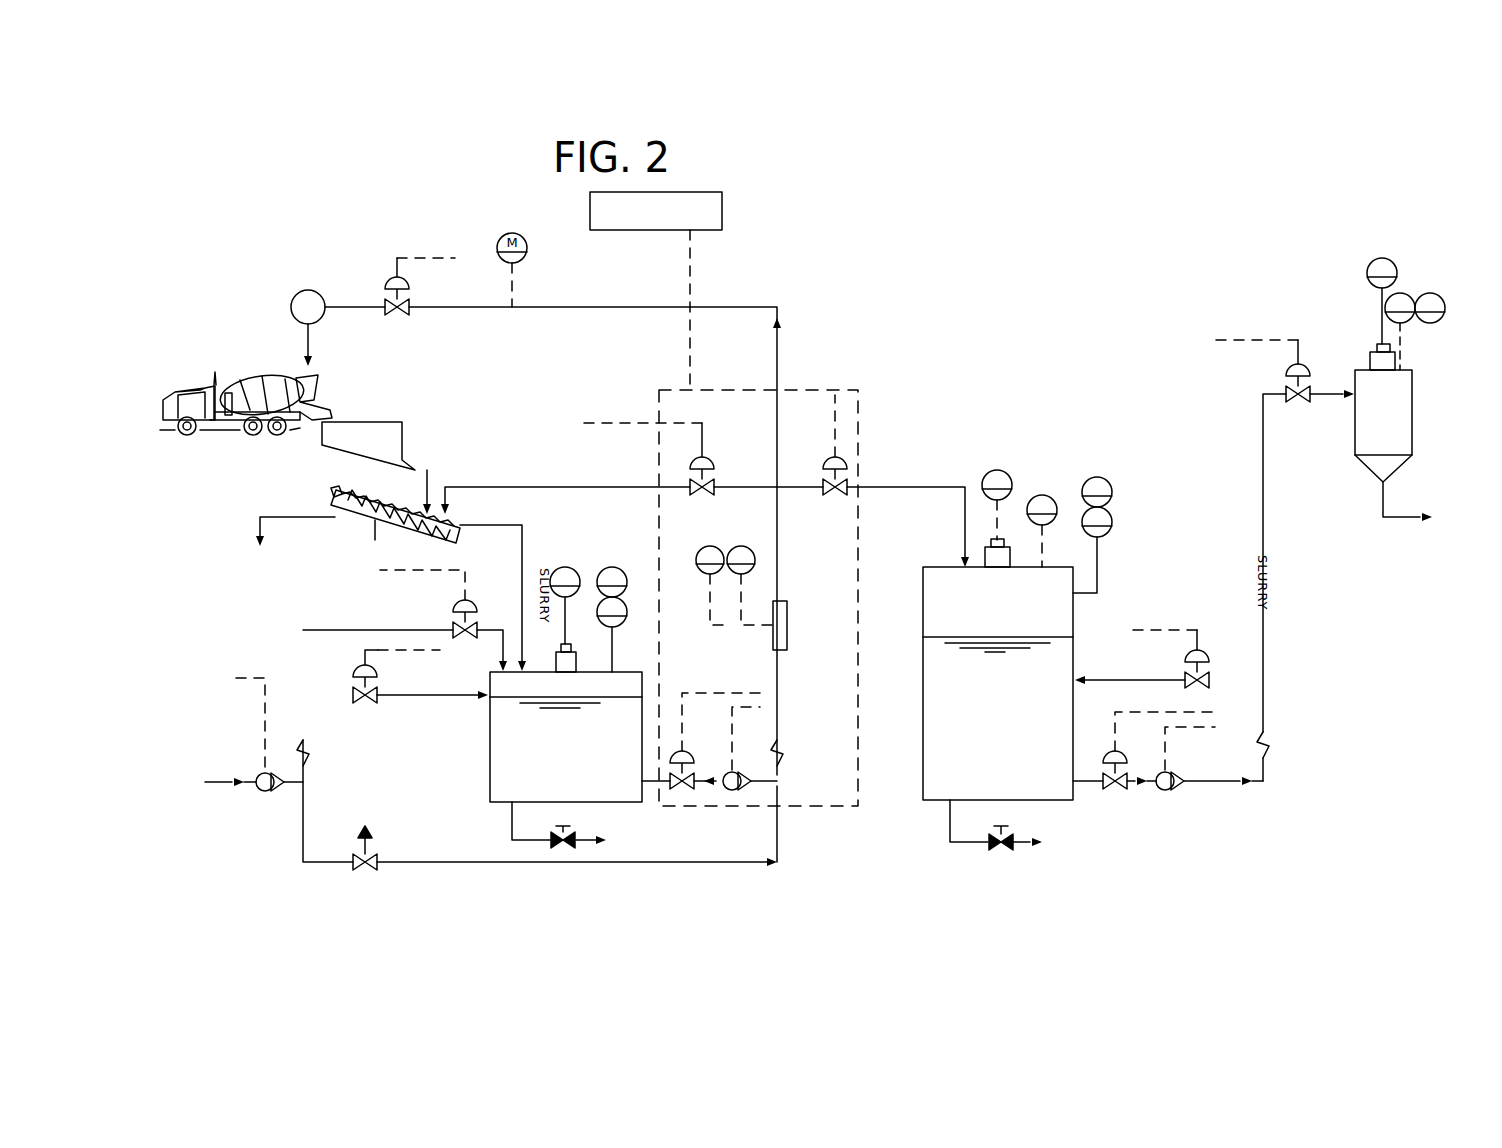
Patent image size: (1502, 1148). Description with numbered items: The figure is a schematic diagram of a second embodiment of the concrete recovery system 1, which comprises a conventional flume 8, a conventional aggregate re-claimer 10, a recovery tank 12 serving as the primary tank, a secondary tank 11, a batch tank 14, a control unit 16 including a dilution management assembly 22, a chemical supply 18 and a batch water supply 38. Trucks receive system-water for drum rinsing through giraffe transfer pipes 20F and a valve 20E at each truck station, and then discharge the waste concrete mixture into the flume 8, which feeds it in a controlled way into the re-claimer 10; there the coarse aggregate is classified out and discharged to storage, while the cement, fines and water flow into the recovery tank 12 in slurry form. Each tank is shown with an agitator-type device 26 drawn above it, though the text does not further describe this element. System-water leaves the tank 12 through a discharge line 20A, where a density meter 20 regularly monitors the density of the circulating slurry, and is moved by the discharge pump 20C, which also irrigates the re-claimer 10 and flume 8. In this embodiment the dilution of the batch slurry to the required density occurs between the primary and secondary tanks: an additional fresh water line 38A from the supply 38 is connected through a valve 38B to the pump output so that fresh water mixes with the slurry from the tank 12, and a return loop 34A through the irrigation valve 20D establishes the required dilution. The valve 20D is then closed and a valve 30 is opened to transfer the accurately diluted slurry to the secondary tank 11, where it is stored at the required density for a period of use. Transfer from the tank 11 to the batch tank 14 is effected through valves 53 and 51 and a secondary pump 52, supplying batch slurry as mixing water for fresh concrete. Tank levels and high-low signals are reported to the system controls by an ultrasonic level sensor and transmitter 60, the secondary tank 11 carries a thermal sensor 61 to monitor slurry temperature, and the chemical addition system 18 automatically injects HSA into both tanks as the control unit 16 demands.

The concrete recovery system 1 is at (757, 290).
The flume 8 is at (367, 430).
The aggregate re-claimer 10 is at (398, 510).
The secondary tank 11 is at (932, 795).
The recovery tank 12 is at (489, 757).
The batch tank 14 is at (1355, 415).
The control unit 16 is at (718, 192).
The chemical supply 18 is at (372, 700).
The density meter 20 is at (705, 548).
The discharge line 20A is at (740, 548).
The discharge pump 20C is at (742, 790).
The irrigation valve 20D is at (706, 472).
The valve 20E is at (392, 310).
The giraffe transfer pipes 20F is at (432, 310).
The dilution management assembly 22 is at (248, 392).
The agitator 26 is at (562, 568).
The valve 30 is at (838, 497).
The return loop 34A is at (578, 485).
The batch water supply 38 is at (262, 790).
The fresh water line 38A is at (558, 866).
The valve 38B is at (374, 852).
The valve 51 is at (1290, 393).
The secondary pump 52 is at (1175, 790).
The valve 53 is at (1112, 792).
The ultrasonic level sensor and transmitter 60 is at (605, 565).
The thermal sensor 61 is at (1036, 495).